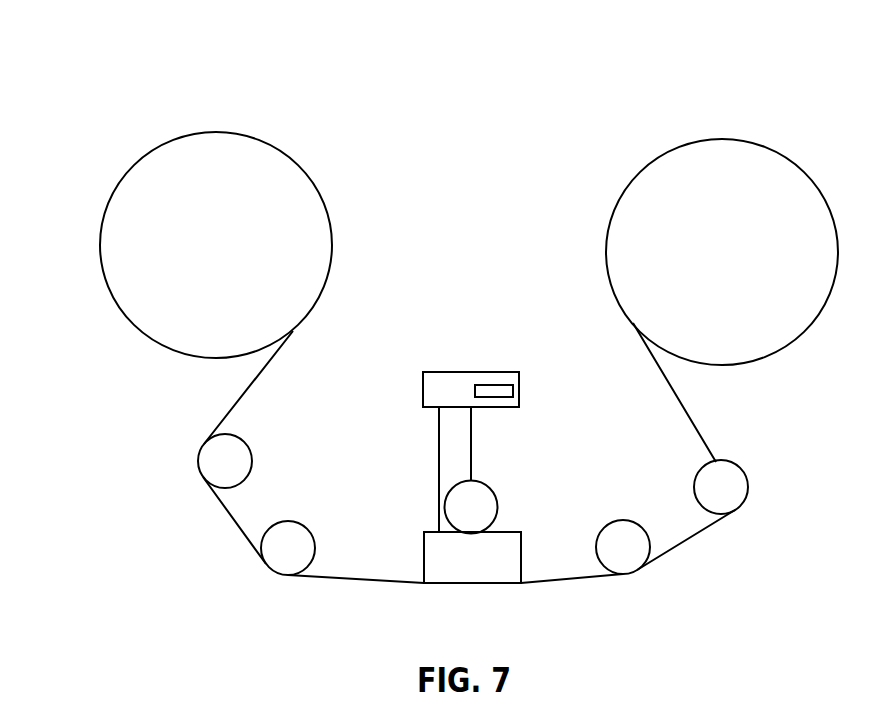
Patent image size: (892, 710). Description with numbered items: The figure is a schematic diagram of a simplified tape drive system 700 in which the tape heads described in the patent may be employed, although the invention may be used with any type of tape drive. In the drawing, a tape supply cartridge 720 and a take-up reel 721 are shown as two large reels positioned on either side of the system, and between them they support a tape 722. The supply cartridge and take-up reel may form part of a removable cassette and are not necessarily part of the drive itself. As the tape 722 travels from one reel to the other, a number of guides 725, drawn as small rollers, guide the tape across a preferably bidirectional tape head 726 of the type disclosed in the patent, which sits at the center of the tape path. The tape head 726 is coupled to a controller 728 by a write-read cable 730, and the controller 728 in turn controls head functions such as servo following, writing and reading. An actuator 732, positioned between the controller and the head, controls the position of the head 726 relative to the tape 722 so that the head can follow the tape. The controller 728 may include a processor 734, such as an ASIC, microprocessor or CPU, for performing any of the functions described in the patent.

The tape drive system 700 is at (100, 128).
The tape supply cartridge 720 is at (217, 131).
The take-up reel 721 is at (720, 138).
The tape 722 is at (358, 580).
The guides 725 is at (252, 458).
The tape head 726 is at (522, 558).
The controller 728 is at (469, 372).
The write-read cable 730 is at (439, 503).
The actuator 732 is at (487, 486).
The processor 734 is at (503, 372).